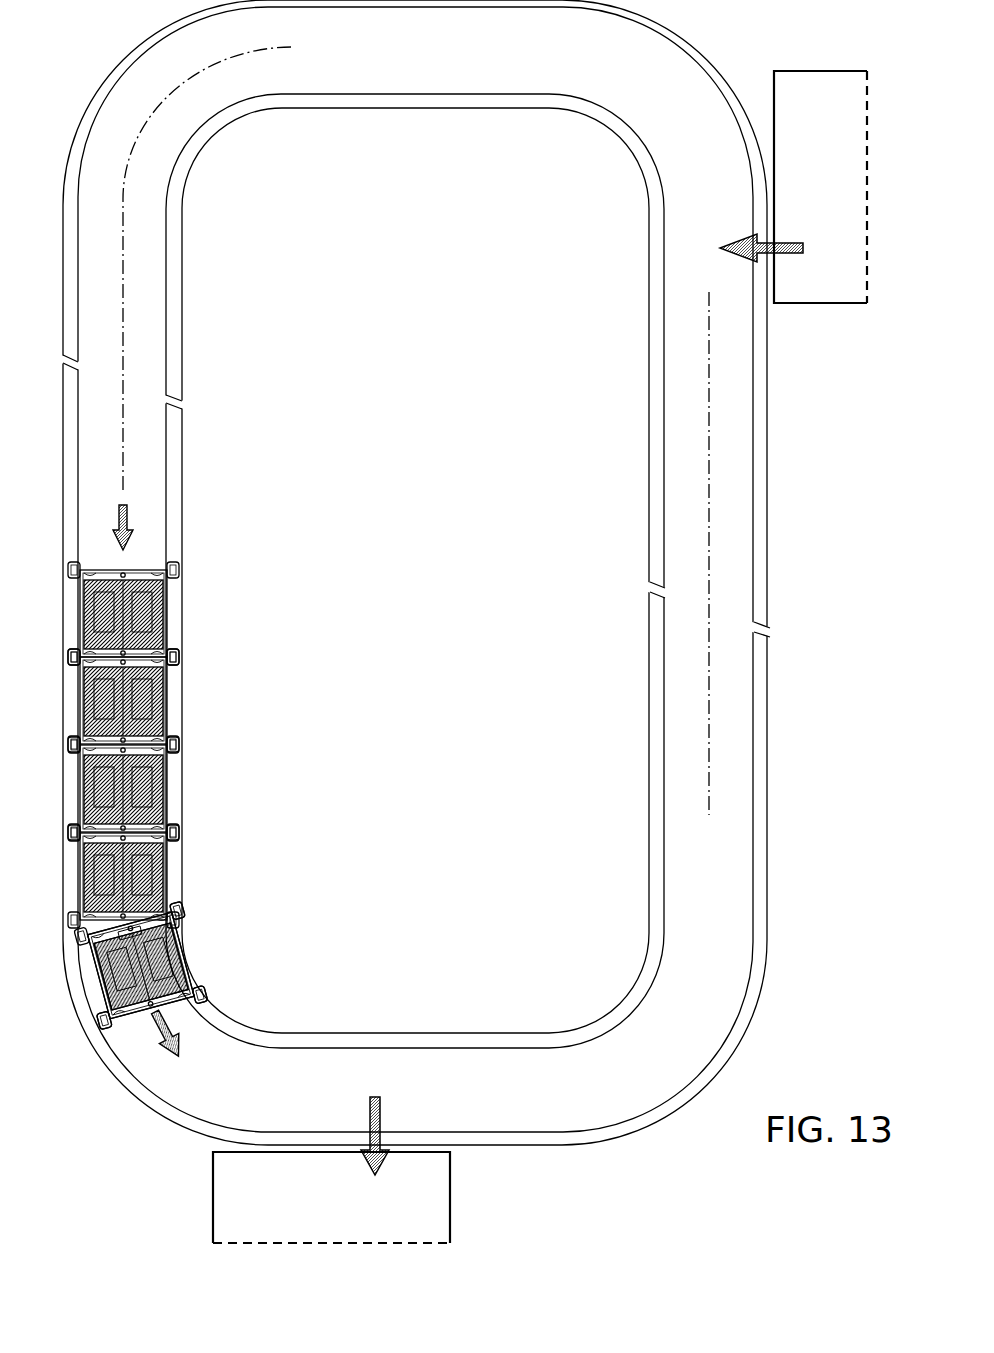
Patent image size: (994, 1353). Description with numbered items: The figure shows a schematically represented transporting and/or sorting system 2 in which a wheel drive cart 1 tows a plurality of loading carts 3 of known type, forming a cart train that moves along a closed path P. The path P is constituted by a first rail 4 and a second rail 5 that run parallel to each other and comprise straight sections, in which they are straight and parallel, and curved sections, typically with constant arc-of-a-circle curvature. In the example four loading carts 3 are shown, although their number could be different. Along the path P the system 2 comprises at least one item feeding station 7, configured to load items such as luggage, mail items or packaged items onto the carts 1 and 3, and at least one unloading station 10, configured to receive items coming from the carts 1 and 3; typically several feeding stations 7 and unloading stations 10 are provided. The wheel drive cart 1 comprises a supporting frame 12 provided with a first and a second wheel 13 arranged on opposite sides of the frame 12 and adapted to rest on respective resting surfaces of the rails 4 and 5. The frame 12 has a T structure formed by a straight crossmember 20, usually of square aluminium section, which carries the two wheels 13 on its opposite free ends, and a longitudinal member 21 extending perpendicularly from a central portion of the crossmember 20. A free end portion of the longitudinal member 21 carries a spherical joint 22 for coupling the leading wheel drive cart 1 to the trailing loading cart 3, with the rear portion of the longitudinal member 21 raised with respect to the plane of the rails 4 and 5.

The wheel drive cart 1 is at (204, 783).
The transporting and/or sorting system 2 is at (416, 605).
The loading cart 3 is at (190, 625).
The first rail 4 is at (176, 457).
The second rail 5 is at (70, 417).
The item feeding station 7 is at (827, 285).
The unloading station 10 is at (418, 1196).
The supporting frame 12 is at (95, 973).
The wheel 13 is at (213, 1004).
The crossmember 20 is at (170, 1010).
The longitudinal member 21 is at (143, 960).
The spherical joint 22 is at (132, 937).
The closed path P is at (123, 315).